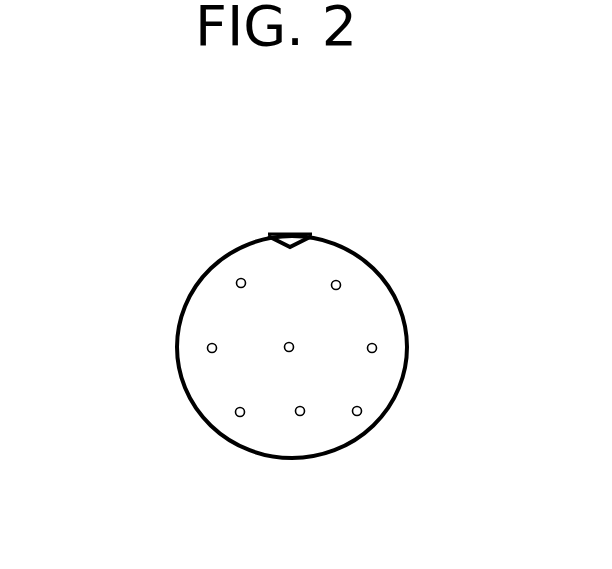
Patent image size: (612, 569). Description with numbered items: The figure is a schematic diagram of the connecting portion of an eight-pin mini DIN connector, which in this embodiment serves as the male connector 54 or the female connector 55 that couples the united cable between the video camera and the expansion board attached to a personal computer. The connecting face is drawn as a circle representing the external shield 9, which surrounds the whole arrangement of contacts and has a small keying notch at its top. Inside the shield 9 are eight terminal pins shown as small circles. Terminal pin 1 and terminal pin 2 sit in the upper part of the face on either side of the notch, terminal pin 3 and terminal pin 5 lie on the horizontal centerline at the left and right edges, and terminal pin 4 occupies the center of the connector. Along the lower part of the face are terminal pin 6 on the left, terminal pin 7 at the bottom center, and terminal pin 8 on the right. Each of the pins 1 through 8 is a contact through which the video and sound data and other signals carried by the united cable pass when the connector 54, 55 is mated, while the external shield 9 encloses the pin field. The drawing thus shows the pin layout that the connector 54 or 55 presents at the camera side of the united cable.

The terminal pin 1 is at (245, 287).
The terminal pin 2 is at (340, 281).
The terminal pin 3 is at (207, 351).
The terminal pin 4 is at (294, 350).
The terminal pin 5 is at (377, 348).
The terminal pin 6 is at (236, 416).
The terminal pin 7 is at (302, 416).
The terminal pin 8 is at (360, 416).
The external shield 9 is at (402, 306).
The male connector 54 is at (169, 203).
The female connector 55 is at (213, 240).